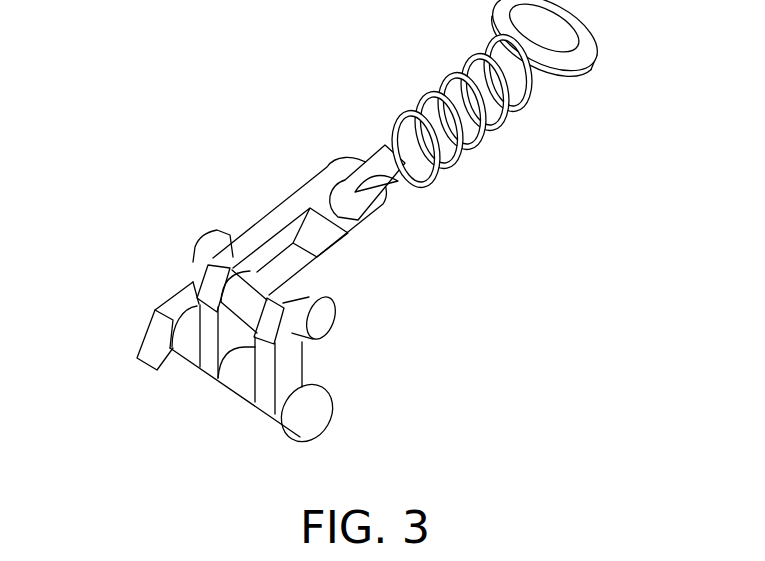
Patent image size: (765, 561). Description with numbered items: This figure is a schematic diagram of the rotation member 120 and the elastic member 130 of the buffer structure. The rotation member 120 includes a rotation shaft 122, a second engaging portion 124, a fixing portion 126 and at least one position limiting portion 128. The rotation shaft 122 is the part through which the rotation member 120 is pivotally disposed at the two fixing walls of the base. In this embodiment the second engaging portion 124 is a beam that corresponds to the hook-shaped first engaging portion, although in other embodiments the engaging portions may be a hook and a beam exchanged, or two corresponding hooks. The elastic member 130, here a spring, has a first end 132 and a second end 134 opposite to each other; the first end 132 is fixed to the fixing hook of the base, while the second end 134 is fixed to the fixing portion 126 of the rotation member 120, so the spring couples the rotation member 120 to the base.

The rotation member 120 is at (133, 160).
The rotation shaft 122 is at (323, 423).
The second engaging portion 124 is at (255, 283).
The fixing portion 126 is at (382, 207).
The position limiting portion 128 is at (208, 253).
The elastic member 130 is at (585, 157).
The first end 132 is at (557, 77).
The second end 134 is at (407, 190).